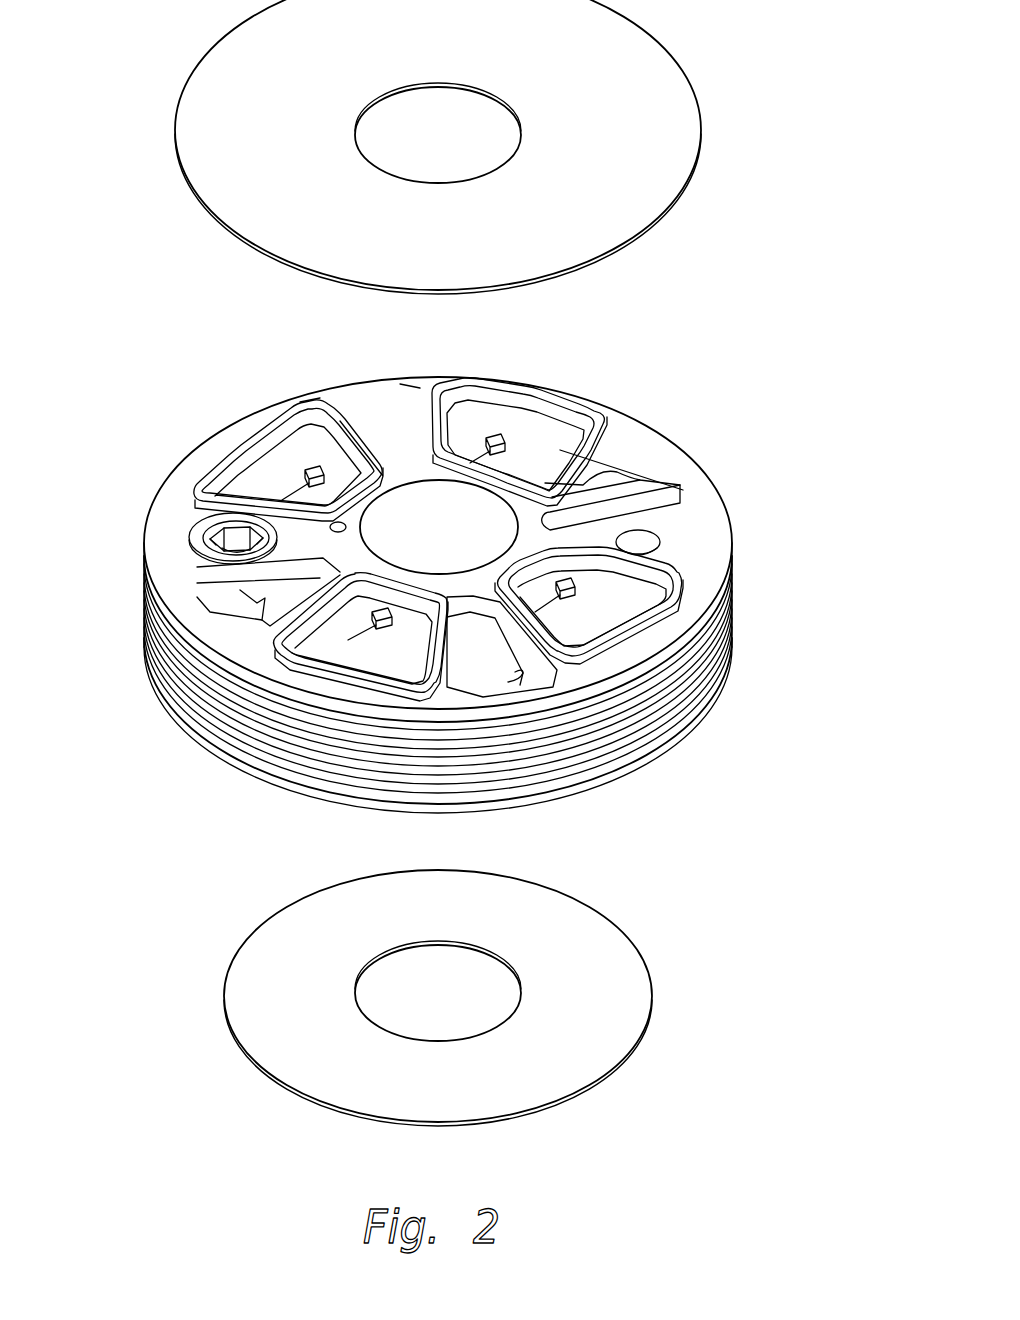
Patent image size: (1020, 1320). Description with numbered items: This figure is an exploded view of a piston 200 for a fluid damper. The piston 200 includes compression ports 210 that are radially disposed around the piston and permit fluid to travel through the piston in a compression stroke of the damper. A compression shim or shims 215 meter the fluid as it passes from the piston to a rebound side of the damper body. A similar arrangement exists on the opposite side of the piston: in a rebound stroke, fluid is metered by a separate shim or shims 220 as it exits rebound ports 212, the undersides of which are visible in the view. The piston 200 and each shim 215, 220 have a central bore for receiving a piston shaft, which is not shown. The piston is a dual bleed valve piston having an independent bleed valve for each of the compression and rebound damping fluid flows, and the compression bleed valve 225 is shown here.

The piston 200 is at (693, 524).
The compression ports 210 is at (550, 428).
The rebound ports 212 is at (641, 470).
The compression shim 215 is at (651, 42).
The rebound shim 220 is at (623, 930).
The compression bleed valve 225 is at (205, 528).